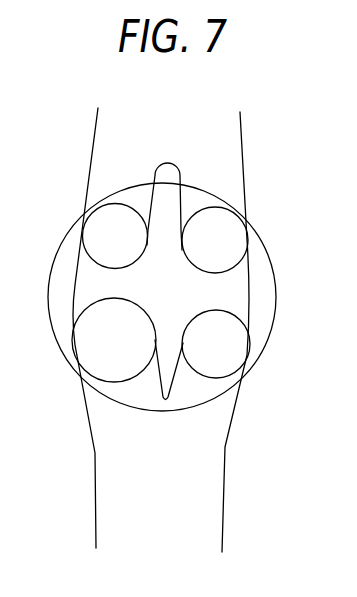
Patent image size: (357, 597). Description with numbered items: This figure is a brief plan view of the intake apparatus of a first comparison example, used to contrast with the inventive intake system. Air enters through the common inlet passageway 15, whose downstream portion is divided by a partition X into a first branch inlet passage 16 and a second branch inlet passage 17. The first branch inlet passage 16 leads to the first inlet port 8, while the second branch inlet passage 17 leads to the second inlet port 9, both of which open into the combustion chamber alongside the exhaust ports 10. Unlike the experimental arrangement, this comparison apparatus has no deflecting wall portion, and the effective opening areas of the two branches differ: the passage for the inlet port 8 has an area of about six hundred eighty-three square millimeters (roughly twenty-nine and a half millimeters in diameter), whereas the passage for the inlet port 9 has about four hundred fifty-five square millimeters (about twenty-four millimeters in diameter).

The first inlet port 8 is at (88, 355).
The second inlet port 9 is at (237, 350).
The exhaust ports 10 is at (98, 232).
The common inlet passageway 15 is at (203, 523).
The first branch inlet passage 16 is at (117, 393).
The second branch inlet passage 17 is at (217, 387).
The partition X is at (165, 378).